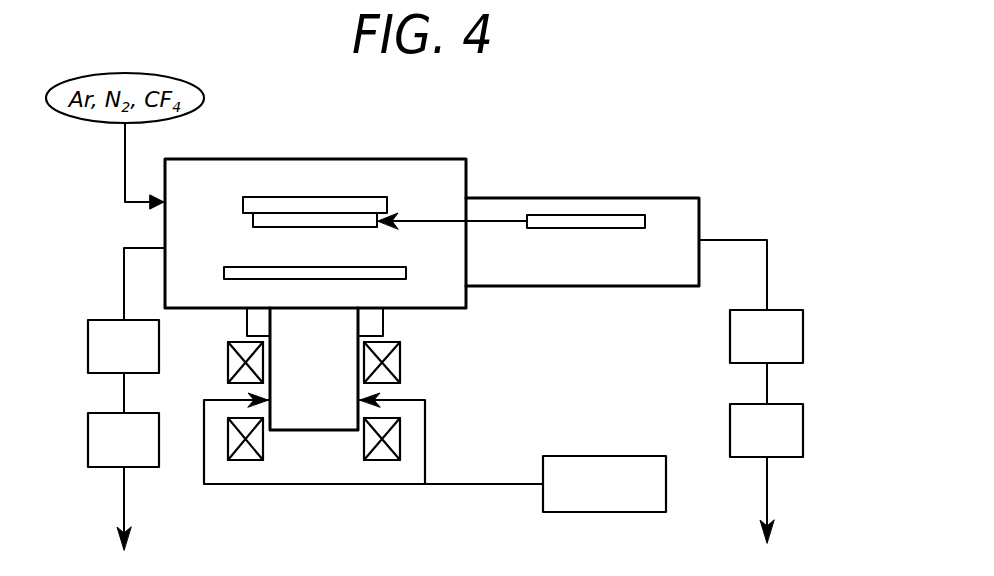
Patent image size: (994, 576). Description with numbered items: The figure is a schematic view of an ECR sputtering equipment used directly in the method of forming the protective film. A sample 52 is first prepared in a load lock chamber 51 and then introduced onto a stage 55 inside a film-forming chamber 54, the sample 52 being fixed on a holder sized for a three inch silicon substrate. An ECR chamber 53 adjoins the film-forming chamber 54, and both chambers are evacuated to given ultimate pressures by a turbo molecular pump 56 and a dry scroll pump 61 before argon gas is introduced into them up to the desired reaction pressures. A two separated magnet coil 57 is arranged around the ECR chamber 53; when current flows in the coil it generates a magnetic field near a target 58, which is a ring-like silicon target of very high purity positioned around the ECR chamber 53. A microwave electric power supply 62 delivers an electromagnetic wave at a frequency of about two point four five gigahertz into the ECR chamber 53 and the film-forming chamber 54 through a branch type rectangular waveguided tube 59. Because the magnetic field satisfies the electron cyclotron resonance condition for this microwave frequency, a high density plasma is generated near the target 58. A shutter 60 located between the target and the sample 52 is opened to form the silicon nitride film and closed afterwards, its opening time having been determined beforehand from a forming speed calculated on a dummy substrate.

The load lock chamber 51 is at (665, 206).
The sample 52 is at (357, 227).
The ECR chamber 53 is at (328, 417).
The film-forming chamber 54 is at (272, 180).
The stage 55 is at (365, 202).
The turbo molecular pump 56 is at (98, 352).
The magnet coil 57 is at (395, 362).
The target 58 is at (375, 322).
The branch type rectangular waveguided tube 59 is at (462, 484).
The shutter 60 is at (243, 266).
The dry scroll pump 61 is at (98, 445).
The microwave electric power supply 62 is at (607, 470).